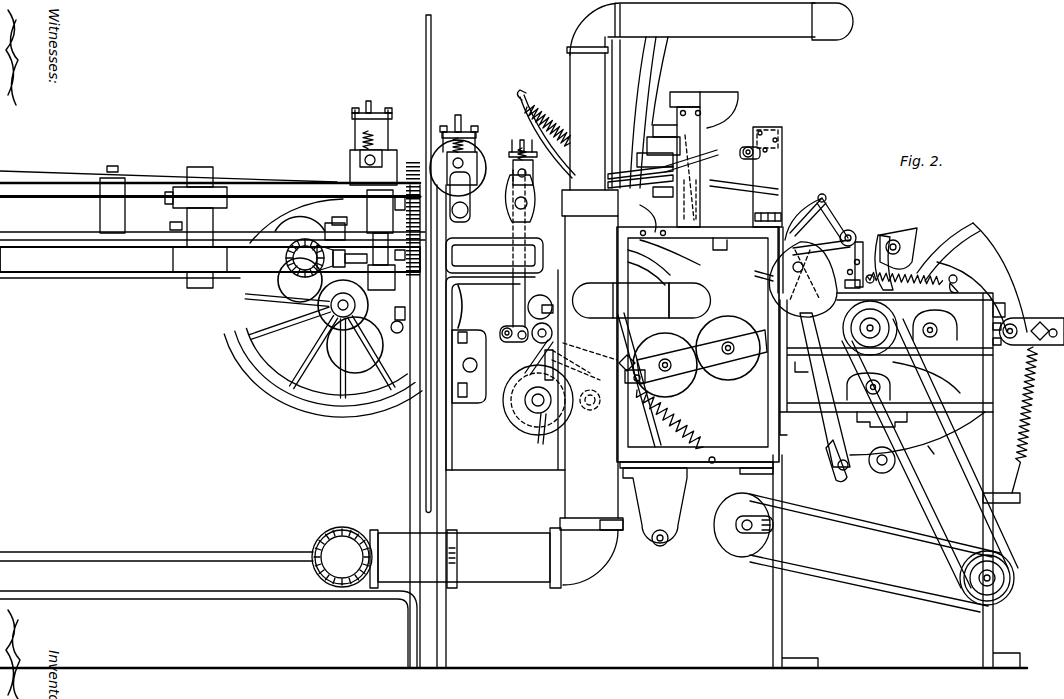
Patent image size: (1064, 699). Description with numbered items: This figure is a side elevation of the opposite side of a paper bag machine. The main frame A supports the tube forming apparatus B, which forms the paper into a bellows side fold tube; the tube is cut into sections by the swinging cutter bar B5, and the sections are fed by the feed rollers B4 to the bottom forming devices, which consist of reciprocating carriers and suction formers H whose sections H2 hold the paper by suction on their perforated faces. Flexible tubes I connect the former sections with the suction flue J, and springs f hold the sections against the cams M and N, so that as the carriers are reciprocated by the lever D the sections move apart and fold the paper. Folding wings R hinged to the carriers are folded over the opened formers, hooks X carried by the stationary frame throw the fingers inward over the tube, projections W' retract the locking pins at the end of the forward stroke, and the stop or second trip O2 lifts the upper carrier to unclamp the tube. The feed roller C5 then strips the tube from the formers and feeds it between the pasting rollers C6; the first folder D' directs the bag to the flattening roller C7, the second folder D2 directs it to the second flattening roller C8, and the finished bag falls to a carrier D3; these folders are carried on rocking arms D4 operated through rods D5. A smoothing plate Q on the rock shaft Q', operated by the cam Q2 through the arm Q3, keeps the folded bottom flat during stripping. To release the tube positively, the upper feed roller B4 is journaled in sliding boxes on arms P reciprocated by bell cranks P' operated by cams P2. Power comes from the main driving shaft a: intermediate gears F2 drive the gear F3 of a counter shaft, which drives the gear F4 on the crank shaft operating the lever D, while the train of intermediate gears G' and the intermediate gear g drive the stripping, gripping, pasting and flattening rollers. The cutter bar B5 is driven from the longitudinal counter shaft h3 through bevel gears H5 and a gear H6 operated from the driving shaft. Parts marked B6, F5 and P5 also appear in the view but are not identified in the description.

The tube forming apparatus B is at (212, 192).
The main frame A is at (767, 404).
The longitudinal counter shaft h3 is at (196, 227).
The main driving shaft a is at (268, 337).
The former section H2 is at (322, 310).
The bevel gears H5 is at (290, 256).
The gear H6 is at (277, 287).
The driving gear of counter shaft F3 is at (390, 247).
The swinging cutter bar B5 is at (424, 44).
The formers H is at (381, 143).
The gear clamp unit B6 is at (468, 155).
The arms P is at (530, 241).
The first folder D' is at (715, 225).
The springs f is at (542, 110).
The suction flue J is at (572, 75).
The flexible tubes I is at (655, 50).
The cam N is at (644, 152).
The cam M is at (703, 163).
The folding wings R is at (644, 167).
The hooks X is at (699, 166).
The stop or second trip O2 is at (747, 146).
The projections W' is at (785, 209).
The smoothing plate Q is at (779, 211).
The arm Q3 is at (852, 229).
The rock shaft Q' is at (912, 253).
The pasting rollers C6 is at (901, 240).
The rocking arms D4 is at (973, 266).
The cam Q2 is at (768, 292).
The flattening roller C7 is at (922, 480).
The intermediate gear g is at (865, 339).
The second flattening roller C8 is at (885, 386).
The second folder D2 is at (935, 377).
The feed roller C5 is at (805, 376).
The rods D5 is at (753, 490).
The carrier D3 is at (866, 465).
The train of intermediate gears G' is at (700, 389).
The lever D is at (639, 380).
The feed rollers B4 is at (522, 320).
The gear on crank shaft F4 is at (528, 308).
The intermediate gears F2 is at (471, 366).
The disk F5 is at (530, 406).
The bell cranks P' is at (509, 345).
The cams P2 is at (565, 378).
The dashed link P5 is at (560, 350).